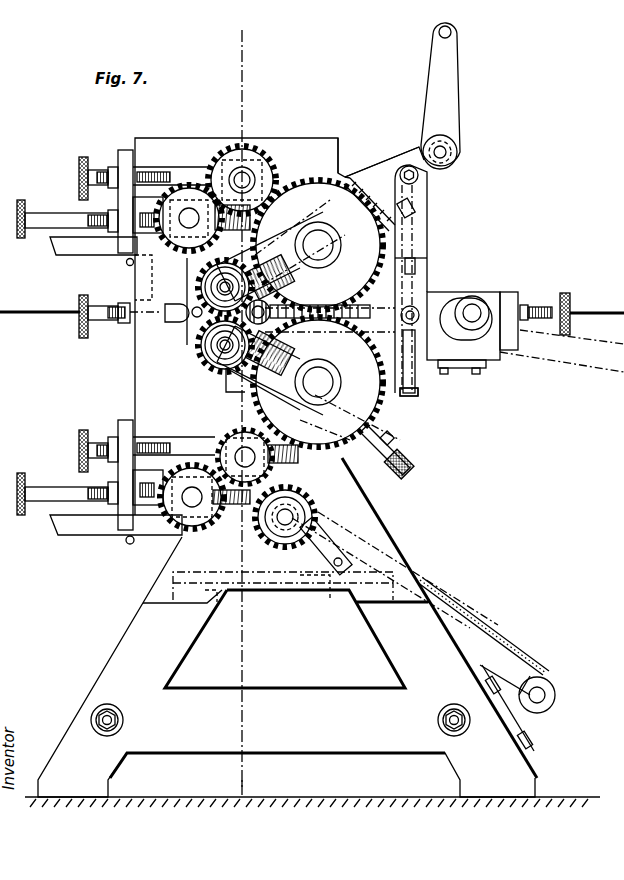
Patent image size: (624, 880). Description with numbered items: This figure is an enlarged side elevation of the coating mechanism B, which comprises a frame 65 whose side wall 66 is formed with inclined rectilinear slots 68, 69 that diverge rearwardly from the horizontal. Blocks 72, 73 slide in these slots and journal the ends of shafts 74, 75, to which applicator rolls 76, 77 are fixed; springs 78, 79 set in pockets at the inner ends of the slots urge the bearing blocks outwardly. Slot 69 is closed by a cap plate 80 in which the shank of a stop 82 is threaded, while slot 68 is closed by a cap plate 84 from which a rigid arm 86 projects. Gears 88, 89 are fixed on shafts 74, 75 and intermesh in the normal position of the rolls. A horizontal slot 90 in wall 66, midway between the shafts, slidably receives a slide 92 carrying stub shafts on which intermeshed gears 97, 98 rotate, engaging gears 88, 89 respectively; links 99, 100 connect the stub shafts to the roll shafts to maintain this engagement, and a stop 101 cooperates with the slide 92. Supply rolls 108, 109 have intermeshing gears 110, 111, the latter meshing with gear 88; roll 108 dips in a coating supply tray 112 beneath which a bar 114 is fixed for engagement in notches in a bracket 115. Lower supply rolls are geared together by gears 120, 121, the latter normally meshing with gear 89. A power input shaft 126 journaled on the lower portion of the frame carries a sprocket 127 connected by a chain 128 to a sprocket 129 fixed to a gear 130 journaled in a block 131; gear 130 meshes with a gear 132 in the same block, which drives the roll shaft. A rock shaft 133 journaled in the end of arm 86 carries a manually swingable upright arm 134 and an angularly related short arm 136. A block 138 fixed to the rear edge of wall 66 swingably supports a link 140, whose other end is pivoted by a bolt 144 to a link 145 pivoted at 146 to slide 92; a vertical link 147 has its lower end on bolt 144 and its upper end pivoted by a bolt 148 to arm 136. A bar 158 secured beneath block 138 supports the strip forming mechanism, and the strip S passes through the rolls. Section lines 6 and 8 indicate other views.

The section line 6 is at (256, 32).
The section line 8 is at (256, 787).
The coating mechanism B is at (291, 101).
The frame 65 is at (386, 526).
The side wall 66 is at (338, 140).
The inclined rectilinear slot 68 is at (400, 235).
The inclined rectilinear slot 69 is at (412, 395).
The block 72 is at (405, 245).
The block 73 is at (330, 385).
The shaft 74 is at (322, 243).
The shaft 75 is at (322, 378).
The applicator roll 76 is at (342, 170).
The applicator roll 77 is at (372, 460).
The spring 78 is at (305, 270).
The spring 79 is at (285, 360).
The cap plate 80 is at (402, 440).
The stop 82 is at (410, 462).
The cap plate 84 is at (362, 160).
The rigid arm 86 is at (404, 160).
The gear 88 is at (370, 260).
The gear 89 is at (285, 445).
The horizontal slot 90 is at (178, 322).
The slide 92 is at (192, 318).
The gear 97 is at (196, 288).
The gear 98 is at (200, 362).
The link 99 is at (272, 250).
The link 100 is at (272, 385).
The stop 101 is at (118, 325).
The supply roll 108 is at (182, 195).
The supply roll 109 is at (252, 150).
The gear 110 is at (205, 165).
The gear 111 is at (310, 228).
The coating supply tray 112 is at (52, 256).
The bar 114 is at (126, 263).
The bracket 115 is at (120, 270).
The gear 120 is at (205, 470).
The gear 121 is at (235, 420).
The power input shaft 126 is at (555, 688).
The sprocket 127 is at (522, 667).
The chain 128 is at (490, 632).
The sprocket 129 is at (320, 528).
The gear 130 is at (308, 505).
The block 131 is at (300, 583).
The gear 132 is at (300, 495).
The rock shaft 133 is at (448, 155).
The upright arm 134 is at (460, 103).
The short arm 136 is at (420, 178).
The block 138 is at (495, 295).
The link 140 is at (435, 300).
The bolt 144 is at (418, 325).
The link 145 is at (368, 332).
The pivot 146 is at (270, 308).
The vertical link 147 is at (416, 212).
The bolt 148 is at (412, 180).
The bar 158 is at (455, 374).
The strip S is at (297, 301).